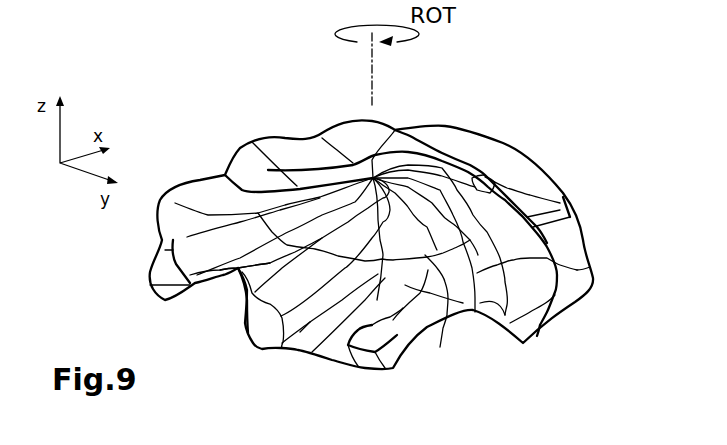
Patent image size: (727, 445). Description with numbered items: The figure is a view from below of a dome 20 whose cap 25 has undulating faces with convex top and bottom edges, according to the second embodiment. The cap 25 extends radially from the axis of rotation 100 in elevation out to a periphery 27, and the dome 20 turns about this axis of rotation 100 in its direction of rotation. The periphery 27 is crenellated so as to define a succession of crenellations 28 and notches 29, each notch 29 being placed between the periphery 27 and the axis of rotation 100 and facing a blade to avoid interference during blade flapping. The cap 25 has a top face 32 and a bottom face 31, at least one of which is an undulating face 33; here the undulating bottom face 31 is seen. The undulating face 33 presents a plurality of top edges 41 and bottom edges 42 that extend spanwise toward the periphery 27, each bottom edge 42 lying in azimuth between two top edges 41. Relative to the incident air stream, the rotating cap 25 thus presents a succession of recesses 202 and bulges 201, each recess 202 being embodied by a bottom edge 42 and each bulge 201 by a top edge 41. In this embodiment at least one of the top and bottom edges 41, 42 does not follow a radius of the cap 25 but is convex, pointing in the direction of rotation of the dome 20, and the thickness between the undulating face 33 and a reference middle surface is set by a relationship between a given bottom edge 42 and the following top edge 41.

The dome 20 is at (418, 261).
The cap 25 is at (500, 163).
The periphery 27 is at (533, 342).
The crenellation 28 is at (282, 347).
The notch 29 is at (473, 342).
The bottom face 31 is at (367, 343).
The top face 32 is at (403, 353).
The undulating face 33 is at (302, 334).
The top edge 41 is at (253, 303).
The bottom edge 42 is at (250, 327).
The axis of rotation 100 is at (372, 85).
The bulge 201 is at (440, 347).
The recess 202 is at (577, 270).